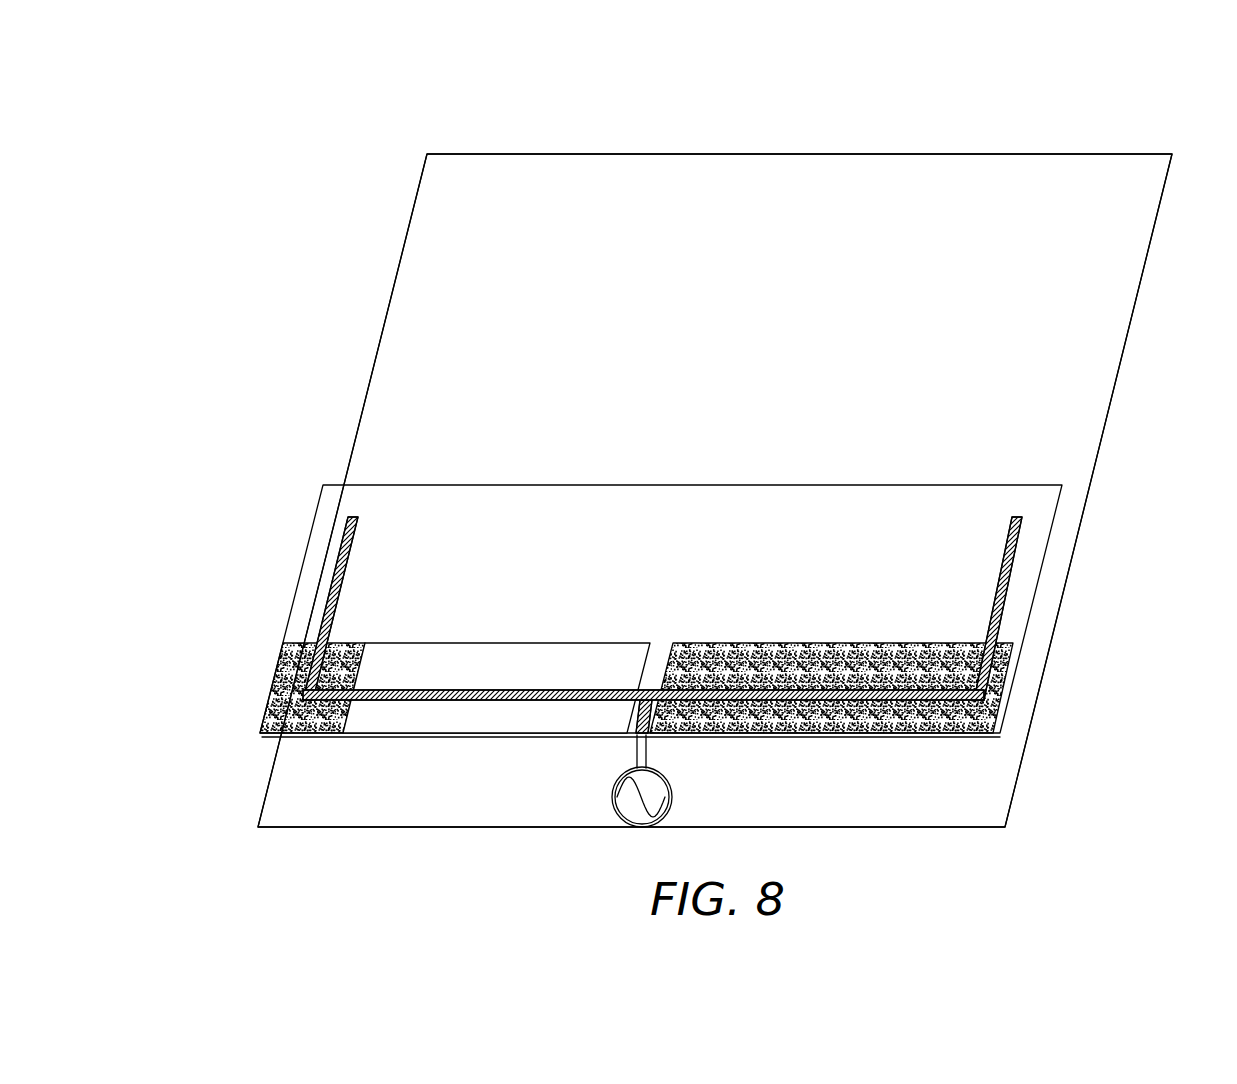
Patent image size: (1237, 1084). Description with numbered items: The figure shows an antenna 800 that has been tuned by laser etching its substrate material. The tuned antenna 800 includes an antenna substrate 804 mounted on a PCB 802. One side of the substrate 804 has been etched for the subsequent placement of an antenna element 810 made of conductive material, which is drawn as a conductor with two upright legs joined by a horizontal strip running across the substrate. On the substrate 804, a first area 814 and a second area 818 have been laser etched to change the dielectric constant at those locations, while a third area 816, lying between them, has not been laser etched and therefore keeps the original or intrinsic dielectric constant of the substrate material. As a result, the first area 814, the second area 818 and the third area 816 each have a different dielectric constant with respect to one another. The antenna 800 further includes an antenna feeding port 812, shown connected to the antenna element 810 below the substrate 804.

The antenna 800 is at (1162, 130).
The PCB 802 is at (405, 236).
The antenna substrate 804 is at (322, 492).
The antenna element 810 is at (342, 546).
The antenna feeding port 812 is at (620, 775).
The first area 814 is at (283, 707).
The third area 816 is at (587, 653).
The second area 818 is at (922, 652).